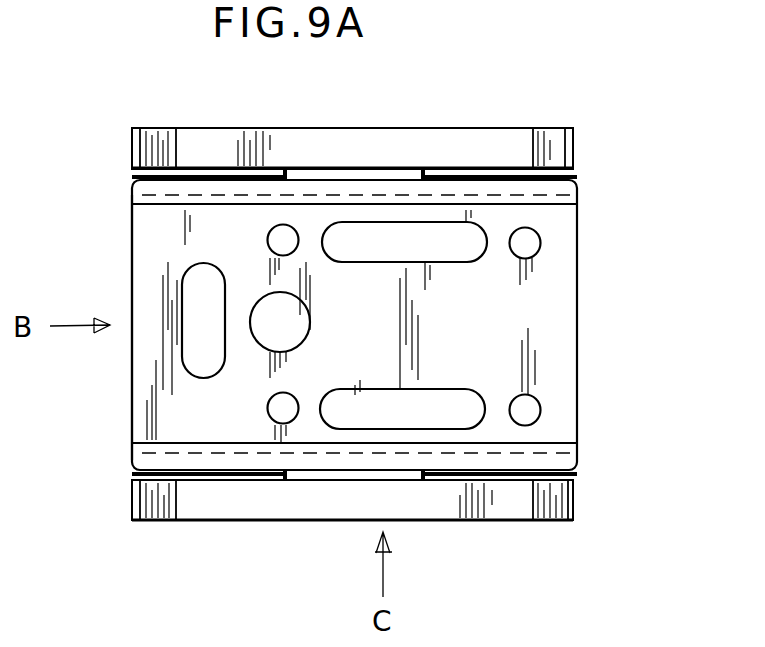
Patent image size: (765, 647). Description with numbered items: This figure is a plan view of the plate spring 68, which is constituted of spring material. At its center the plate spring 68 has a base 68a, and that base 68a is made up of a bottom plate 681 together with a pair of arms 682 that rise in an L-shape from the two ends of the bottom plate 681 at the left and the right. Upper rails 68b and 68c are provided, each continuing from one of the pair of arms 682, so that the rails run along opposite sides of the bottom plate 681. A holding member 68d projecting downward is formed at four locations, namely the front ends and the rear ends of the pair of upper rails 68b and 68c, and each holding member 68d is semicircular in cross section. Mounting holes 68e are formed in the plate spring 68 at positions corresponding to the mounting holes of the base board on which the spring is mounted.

The plate spring 68 is at (343, 333).
The base 68a is at (147, 396).
The upper rail 68b is at (333, 142).
The upper rail 68c is at (490, 510).
The holding member 68d is at (150, 140).
The mounting hole 68e is at (288, 238).
The bottom plate 681 is at (232, 428).
The arm 682 is at (223, 190).